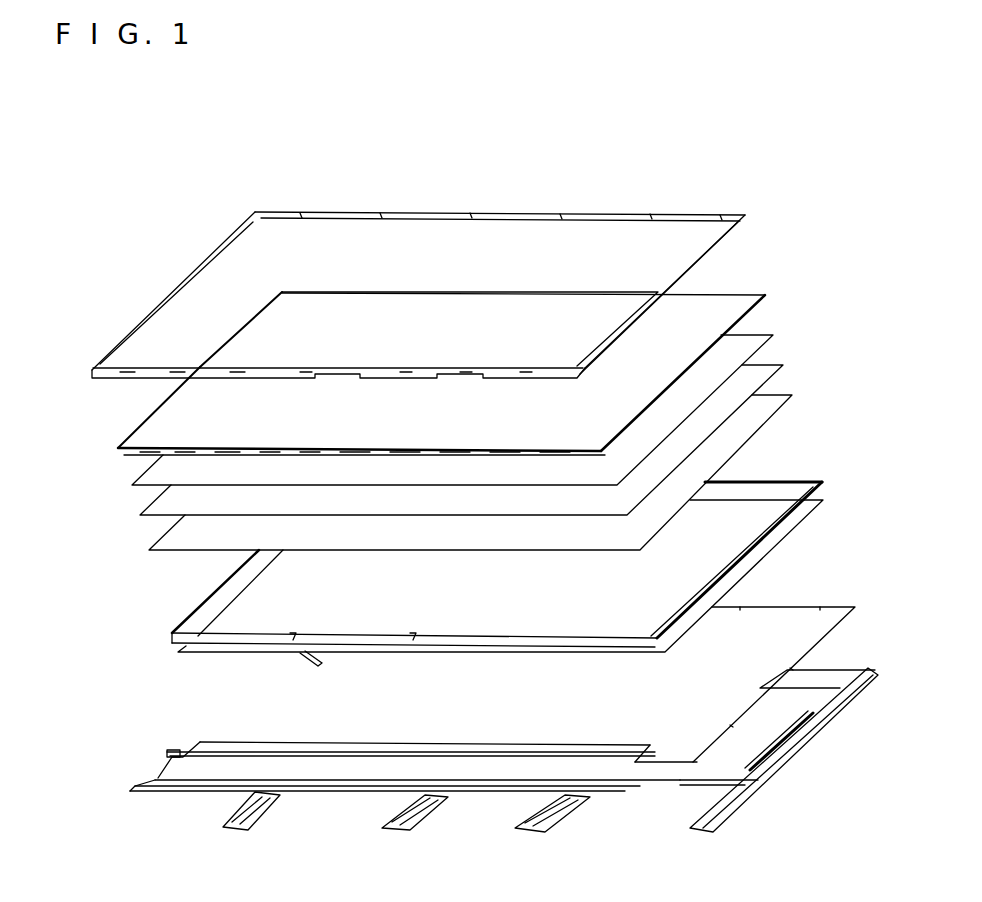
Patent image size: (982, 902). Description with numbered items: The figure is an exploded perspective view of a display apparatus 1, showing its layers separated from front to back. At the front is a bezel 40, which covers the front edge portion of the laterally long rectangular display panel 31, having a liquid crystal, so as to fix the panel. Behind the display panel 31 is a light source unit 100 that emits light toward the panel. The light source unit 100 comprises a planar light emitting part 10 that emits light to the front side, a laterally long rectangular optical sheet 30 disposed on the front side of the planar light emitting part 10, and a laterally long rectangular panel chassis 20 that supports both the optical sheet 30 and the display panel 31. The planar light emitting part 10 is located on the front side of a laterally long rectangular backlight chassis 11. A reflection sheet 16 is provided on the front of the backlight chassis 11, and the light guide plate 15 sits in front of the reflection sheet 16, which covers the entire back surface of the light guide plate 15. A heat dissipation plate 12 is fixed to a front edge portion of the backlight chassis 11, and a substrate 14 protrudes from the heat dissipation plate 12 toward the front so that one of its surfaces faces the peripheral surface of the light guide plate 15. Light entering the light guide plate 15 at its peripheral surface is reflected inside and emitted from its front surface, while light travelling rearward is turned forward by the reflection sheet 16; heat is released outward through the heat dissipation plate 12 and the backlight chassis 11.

The display apparatus 1 is at (345, 150).
The light source unit 100 is at (118, 495).
The planar light emitting part 10 is at (152, 601).
The bezel 40 is at (672, 213).
The display panel 31 is at (722, 298).
The optical sheet 30 is at (795, 332).
The panel chassis 20 is at (777, 479).
The light guide plate 15 is at (807, 520).
The reflection sheet 16 is at (803, 612).
The heat dissipation plate 12 is at (350, 773).
The substrate 14 is at (197, 757).
The backlight chassis 11 is at (683, 782).